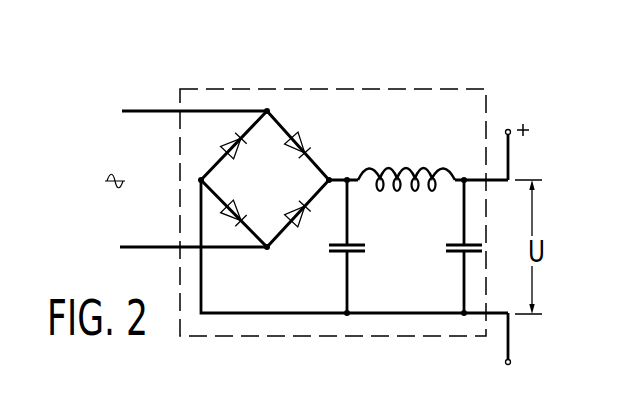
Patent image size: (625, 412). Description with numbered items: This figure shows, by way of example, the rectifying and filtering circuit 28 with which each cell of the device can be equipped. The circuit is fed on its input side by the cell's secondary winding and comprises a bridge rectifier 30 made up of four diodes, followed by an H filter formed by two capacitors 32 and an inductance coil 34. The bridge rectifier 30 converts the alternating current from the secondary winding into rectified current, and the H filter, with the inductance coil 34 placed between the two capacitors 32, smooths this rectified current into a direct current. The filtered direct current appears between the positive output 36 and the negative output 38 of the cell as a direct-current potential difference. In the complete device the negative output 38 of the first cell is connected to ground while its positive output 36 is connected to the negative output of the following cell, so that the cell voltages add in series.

The rectifying and filtering circuit 28 is at (331, 88).
The bridge rectifier 30 is at (297, 139).
The capacitors 32 is at (447, 251).
The inductance coil 34 is at (394, 169).
The positive output 36 is at (518, 116).
The negative output 38 is at (507, 342).